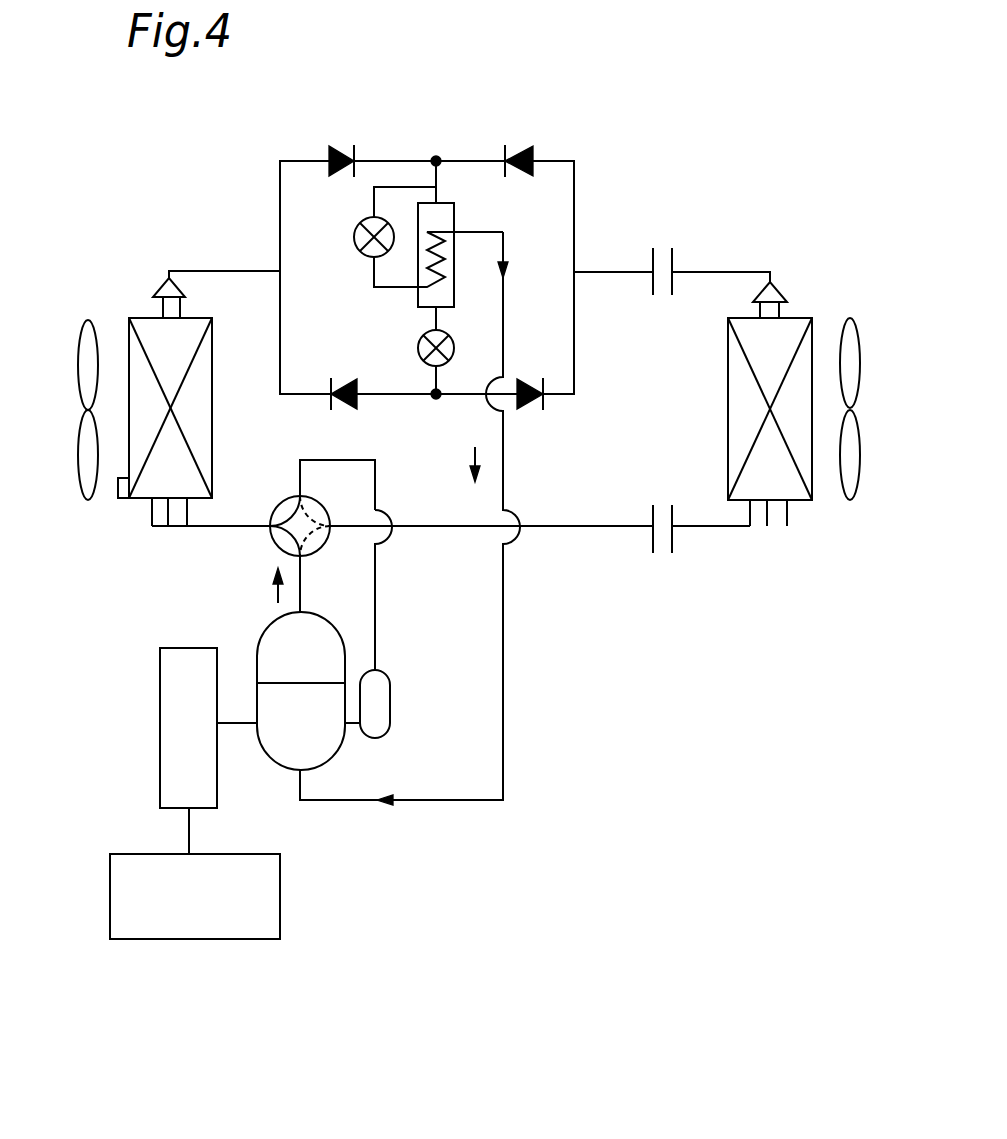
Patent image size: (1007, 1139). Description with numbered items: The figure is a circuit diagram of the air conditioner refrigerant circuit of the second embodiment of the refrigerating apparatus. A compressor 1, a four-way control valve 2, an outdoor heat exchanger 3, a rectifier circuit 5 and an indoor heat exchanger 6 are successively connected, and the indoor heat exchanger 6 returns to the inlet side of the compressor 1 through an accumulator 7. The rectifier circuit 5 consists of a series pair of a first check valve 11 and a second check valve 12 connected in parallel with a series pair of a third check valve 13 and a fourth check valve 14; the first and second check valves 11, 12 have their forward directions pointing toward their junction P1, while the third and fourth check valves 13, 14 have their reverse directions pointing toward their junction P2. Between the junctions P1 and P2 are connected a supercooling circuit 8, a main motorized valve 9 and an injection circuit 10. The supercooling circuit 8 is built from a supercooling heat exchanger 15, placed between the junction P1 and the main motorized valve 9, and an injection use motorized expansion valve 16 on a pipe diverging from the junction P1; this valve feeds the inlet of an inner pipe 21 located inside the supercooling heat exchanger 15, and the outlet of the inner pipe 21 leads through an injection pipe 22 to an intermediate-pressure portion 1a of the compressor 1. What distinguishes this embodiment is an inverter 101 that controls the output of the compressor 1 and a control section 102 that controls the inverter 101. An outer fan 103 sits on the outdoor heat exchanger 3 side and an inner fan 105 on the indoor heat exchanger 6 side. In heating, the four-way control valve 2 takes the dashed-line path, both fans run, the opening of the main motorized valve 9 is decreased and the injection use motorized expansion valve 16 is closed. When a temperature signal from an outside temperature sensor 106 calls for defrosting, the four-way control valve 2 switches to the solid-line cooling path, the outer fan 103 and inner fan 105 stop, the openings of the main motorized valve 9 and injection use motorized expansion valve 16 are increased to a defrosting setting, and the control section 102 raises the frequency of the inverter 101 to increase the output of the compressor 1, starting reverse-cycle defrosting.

The compressor 1 is at (252, 645).
The intermediate-pressure portion 1a is at (297, 768).
The four-way control valve 2 is at (268, 540).
The outdoor heat exchanger 3 is at (122, 316).
The rectifier circuit 5 is at (270, 176).
The indoor heat exchanger 6 is at (728, 365).
The accumulator 7 is at (392, 705).
The supercooling circuit 8 is at (308, 220).
The main motorized valve 9 is at (456, 347).
The injection circuit 10 is at (527, 272).
The first check valve 11 is at (338, 150).
The second check valve 12 is at (533, 153).
The third check valve 13 is at (345, 382).
The fourth check valve 14 is at (528, 405).
The supercooling heat exchanger 15 is at (455, 203).
The injection use motorized expansion valve 16 is at (354, 238).
The inner pipe 21 is at (450, 253).
The injection pipe 22 is at (505, 320).
The inverter 101 is at (160, 710).
The control section 102 is at (152, 940).
The outer fan 103 is at (78, 363).
The inner fan 105 is at (858, 463).
The outside temperature sensor 106 is at (118, 490).
The junction P1 is at (436, 155).
The junction P2 is at (433, 405).